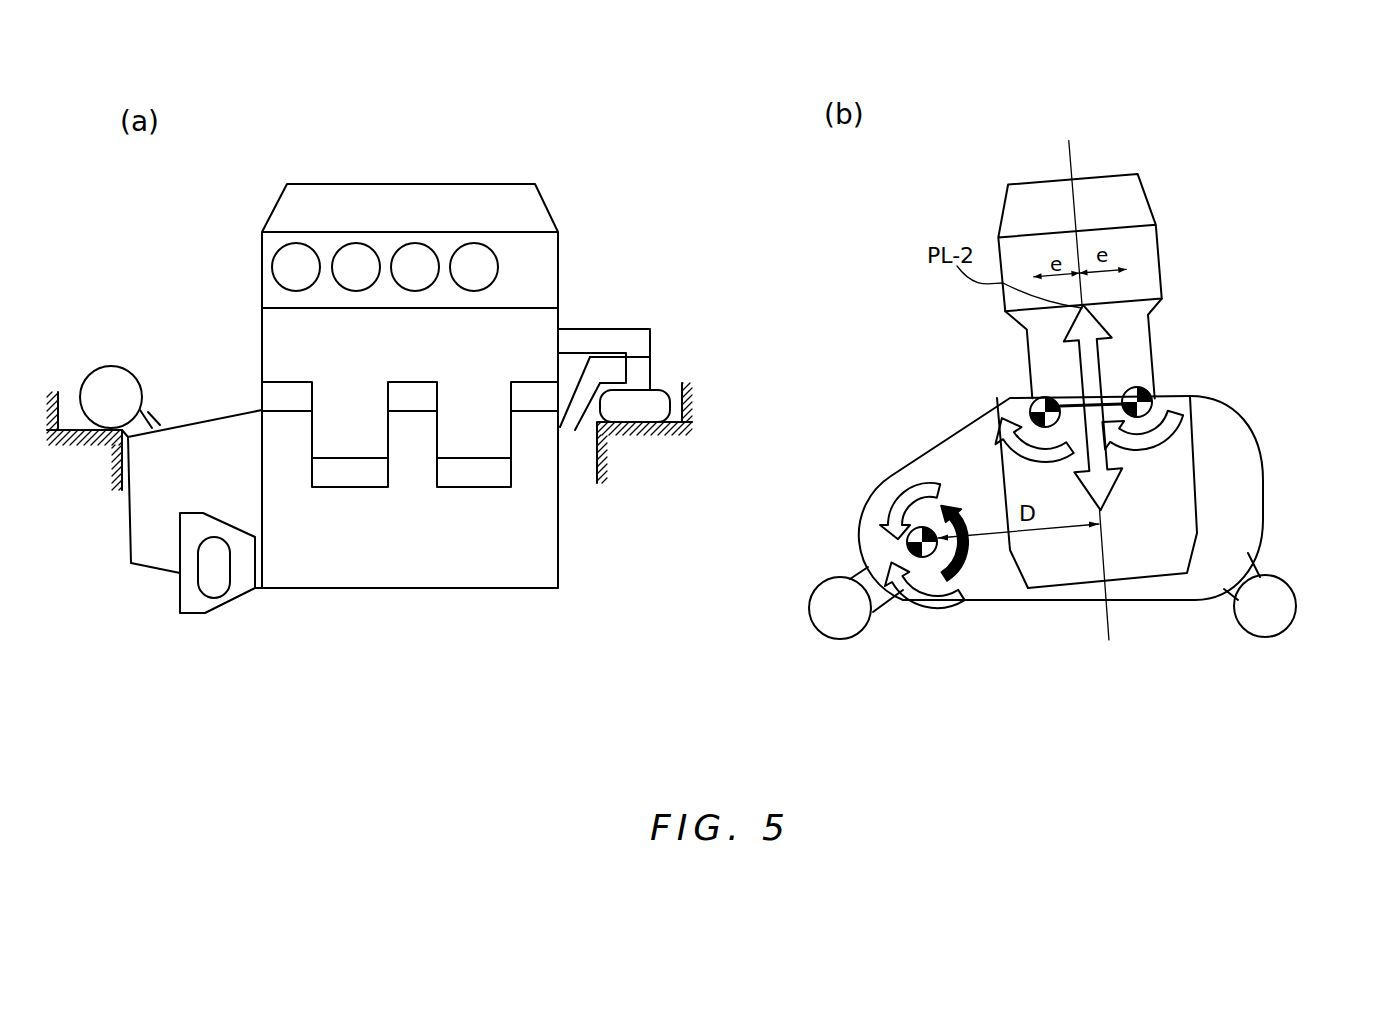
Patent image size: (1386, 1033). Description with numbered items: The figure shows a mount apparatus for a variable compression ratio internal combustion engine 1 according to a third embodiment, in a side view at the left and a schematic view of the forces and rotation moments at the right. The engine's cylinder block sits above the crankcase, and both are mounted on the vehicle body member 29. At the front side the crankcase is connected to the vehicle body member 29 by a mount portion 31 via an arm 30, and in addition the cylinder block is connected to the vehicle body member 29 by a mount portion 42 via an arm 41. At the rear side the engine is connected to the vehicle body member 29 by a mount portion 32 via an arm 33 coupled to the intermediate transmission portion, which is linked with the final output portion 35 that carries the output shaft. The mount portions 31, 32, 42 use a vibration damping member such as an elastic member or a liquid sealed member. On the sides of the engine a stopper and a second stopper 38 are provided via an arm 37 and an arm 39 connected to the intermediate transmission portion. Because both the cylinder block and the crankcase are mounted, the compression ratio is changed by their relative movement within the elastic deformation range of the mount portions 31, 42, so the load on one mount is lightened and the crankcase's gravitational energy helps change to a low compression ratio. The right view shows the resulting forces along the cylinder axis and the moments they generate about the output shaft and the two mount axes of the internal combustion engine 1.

The internal combustion engine 1 is at (582, 628).
The vehicle body member 29 is at (608, 463).
The arm 30 is at (565, 437).
The mount portion 31 is at (692, 369).
The mount portion 32 is at (112, 378).
The arm 33 is at (150, 420).
The final output portion 35 is at (183, 598).
The arm 37 is at (895, 587).
The stopper 38 is at (1280, 623).
The arm 39 is at (1227, 590).
The arm 41 is at (617, 333).
The mount portion 42 is at (672, 384).